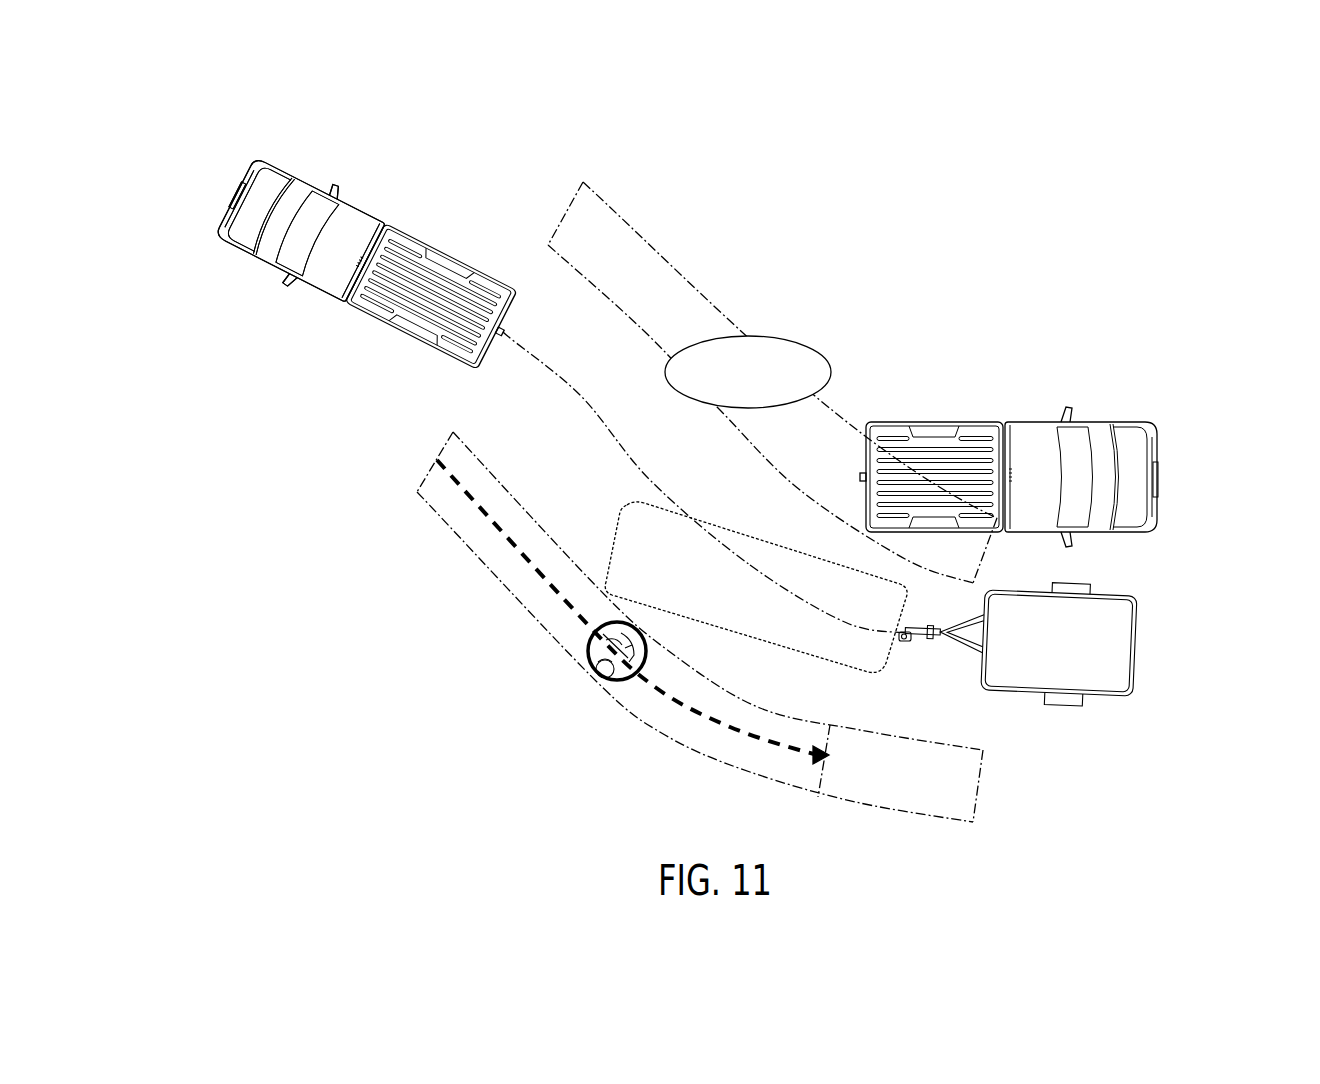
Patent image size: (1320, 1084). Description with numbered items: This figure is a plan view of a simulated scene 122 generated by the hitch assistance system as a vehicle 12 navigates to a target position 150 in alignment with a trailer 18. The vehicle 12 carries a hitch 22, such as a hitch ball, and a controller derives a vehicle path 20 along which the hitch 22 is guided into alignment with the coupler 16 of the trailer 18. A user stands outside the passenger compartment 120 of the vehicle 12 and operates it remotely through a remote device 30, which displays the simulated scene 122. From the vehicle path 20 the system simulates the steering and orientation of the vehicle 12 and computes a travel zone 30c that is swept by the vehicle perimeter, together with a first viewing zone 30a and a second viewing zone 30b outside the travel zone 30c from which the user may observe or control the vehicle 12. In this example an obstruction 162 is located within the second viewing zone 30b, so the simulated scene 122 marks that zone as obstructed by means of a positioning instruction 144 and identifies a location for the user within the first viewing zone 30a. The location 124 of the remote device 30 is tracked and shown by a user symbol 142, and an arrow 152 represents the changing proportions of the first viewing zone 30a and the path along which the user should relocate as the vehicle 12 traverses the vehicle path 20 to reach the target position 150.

The vehicle 12 is at (262, 140).
The passenger compartment 120 is at (323, 272).
The simulated scene 122 is at (1009, 166).
The obstruction 162 is at (1128, 400).
The trailer 18 is at (1103, 578).
The coupler 16 is at (904, 640).
The vehicle path 20 is at (850, 622).
The hitch 22 is at (508, 330).
The remote device 30 is at (609, 682).
The first viewing zone 30a is at (757, 776).
The second viewing zone 30b is at (713, 294).
The travel zone 30c is at (576, 333).
The location of the remote device 124 is at (647, 655).
The user symbol 142 is at (606, 680).
The positioning instruction 144 is at (797, 345).
The target position 150 is at (787, 545).
The arrow 152 is at (530, 563).